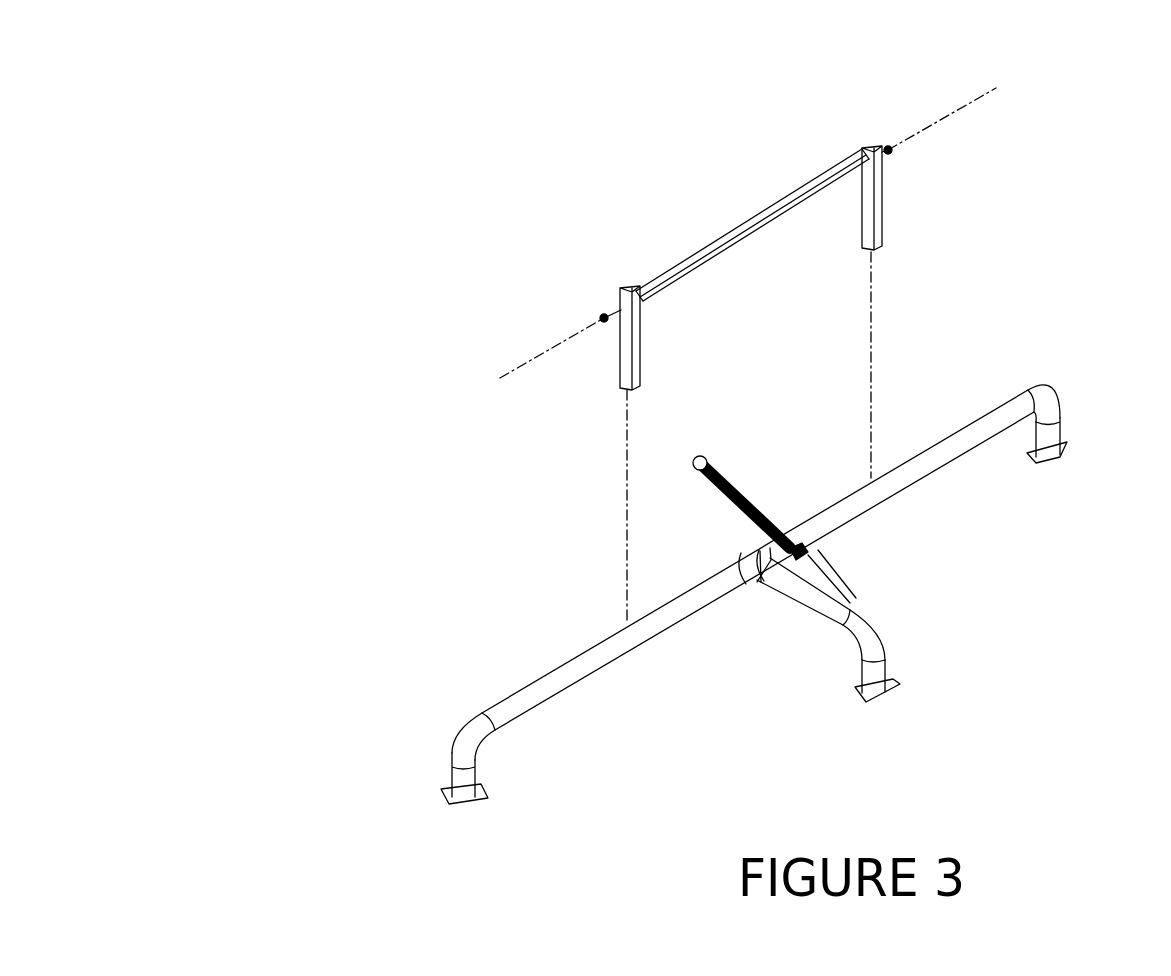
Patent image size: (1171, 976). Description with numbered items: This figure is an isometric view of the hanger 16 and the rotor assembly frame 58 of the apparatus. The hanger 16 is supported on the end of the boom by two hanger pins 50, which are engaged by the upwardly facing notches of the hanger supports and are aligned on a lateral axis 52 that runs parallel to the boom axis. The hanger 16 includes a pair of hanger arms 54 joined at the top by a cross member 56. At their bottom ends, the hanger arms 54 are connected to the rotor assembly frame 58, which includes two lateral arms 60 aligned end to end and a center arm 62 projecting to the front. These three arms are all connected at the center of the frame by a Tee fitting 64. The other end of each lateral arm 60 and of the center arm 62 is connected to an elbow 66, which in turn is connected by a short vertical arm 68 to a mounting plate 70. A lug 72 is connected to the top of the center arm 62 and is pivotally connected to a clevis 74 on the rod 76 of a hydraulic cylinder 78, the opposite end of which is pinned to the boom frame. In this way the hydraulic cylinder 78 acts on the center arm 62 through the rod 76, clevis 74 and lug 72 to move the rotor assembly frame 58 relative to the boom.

The hanger 16 is at (659, 321).
The hanger pins 50 is at (886, 148).
The lateral axis 52 is at (946, 112).
The hanger arms 54 is at (868, 207).
The cross member 56 is at (752, 218).
The rotor assembly frame 58 is at (685, 599).
The lateral arms 60 is at (543, 686).
The center arm 62 is at (798, 590).
The Tee fitting 64 is at (745, 562).
The elbow 66 is at (468, 737).
The short vertical arm 68 is at (462, 778).
The mounting plate 70 is at (452, 803).
The lug 72 is at (820, 566).
The clevis 74 is at (817, 567).
The rod 76 is at (748, 580).
The hydraulic cylinder 78 is at (748, 495).